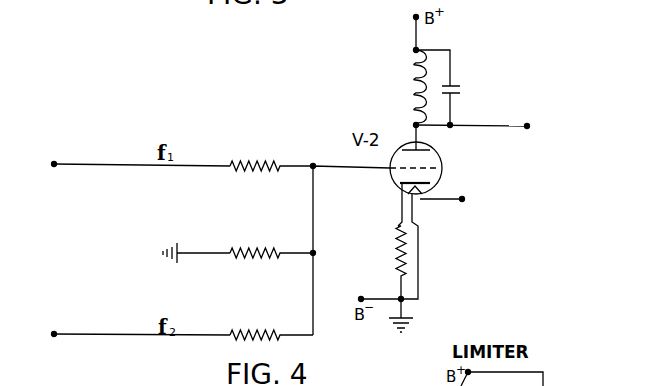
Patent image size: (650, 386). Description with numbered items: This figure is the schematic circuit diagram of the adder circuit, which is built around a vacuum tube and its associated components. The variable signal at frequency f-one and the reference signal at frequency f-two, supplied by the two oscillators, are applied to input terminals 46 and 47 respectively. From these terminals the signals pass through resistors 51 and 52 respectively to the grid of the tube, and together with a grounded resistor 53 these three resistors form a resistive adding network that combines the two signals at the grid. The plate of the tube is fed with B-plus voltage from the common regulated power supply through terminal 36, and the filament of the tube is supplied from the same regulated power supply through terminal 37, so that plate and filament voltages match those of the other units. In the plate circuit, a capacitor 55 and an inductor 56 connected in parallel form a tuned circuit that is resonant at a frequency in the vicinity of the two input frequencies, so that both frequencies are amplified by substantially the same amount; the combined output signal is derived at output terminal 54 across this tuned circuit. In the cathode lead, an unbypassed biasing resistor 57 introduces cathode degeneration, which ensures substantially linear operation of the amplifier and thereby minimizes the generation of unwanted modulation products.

The terminal 36 is at (416, 17).
The inductor 56 is at (411, 78).
The capacitor 55 is at (456, 86).
The output terminal 54 is at (527, 126).
The terminal 37 is at (462, 199).
The unbypassed biasing resistor 57 is at (397, 250).
The input terminal 46 is at (54, 164).
The resistor 51 is at (259, 166).
The resistor 53 is at (258, 253).
The input terminal 47 is at (54, 334).
The resistor 52 is at (256, 335).